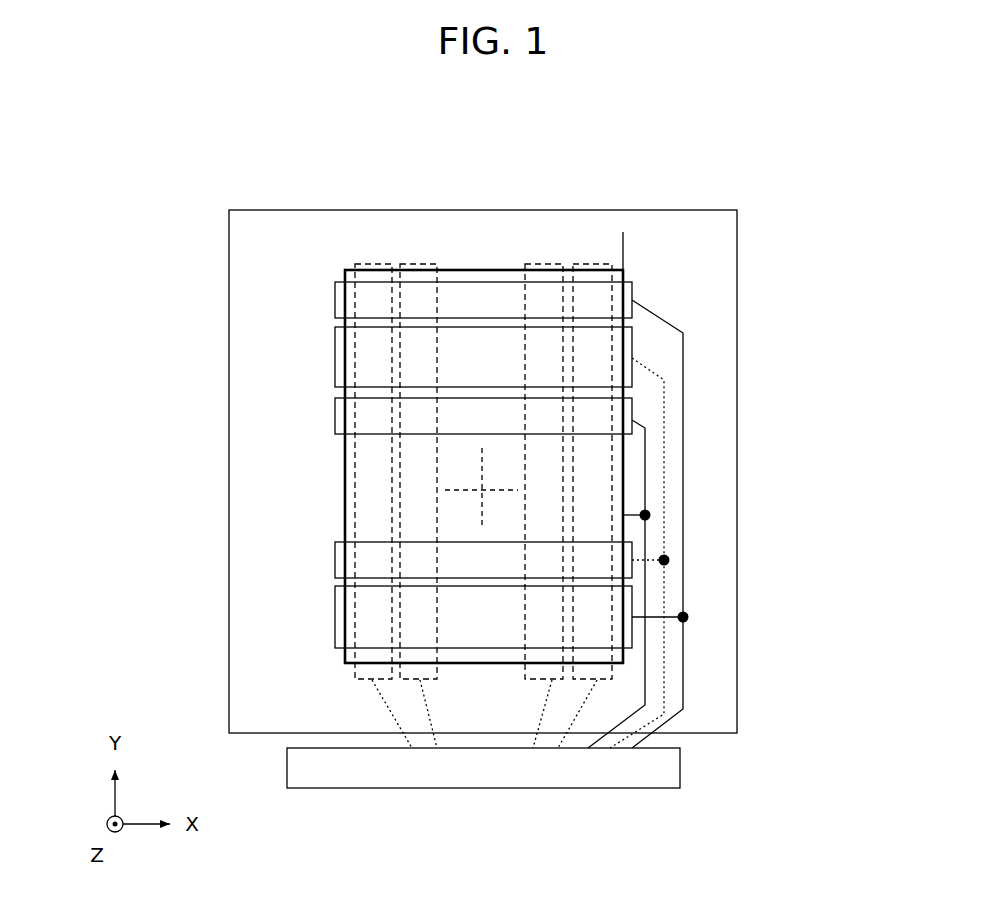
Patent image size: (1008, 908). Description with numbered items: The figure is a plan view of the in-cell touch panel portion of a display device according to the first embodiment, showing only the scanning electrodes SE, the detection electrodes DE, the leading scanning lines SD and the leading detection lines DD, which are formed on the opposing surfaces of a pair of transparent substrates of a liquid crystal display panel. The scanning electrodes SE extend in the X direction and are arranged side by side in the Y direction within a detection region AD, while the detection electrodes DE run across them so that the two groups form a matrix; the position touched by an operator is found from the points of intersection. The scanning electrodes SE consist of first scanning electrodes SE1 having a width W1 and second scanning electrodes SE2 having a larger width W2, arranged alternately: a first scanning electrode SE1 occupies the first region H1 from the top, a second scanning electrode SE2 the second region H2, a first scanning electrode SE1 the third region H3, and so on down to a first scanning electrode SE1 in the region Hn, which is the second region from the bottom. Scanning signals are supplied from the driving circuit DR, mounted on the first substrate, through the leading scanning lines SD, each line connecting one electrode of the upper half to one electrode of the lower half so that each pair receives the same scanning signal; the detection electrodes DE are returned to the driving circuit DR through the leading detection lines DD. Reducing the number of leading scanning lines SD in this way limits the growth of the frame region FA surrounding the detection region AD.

The detection region AD is at (484, 409).
The frame region FA is at (623, 248).
The detection electrode DE is at (499, 415).
The scanning electrode SE is at (836, 252).
The first scanning electrode SE1 is at (632, 290).
The second scanning electrode SE2 is at (632, 348).
The leading scanning line SD is at (648, 463).
The leading detection line DD is at (576, 712).
The driving circuit DR is at (483, 768).
The width of first scanning electrode W1 is at (335, 282).
The width of second scanning electrode W2 is at (335, 327).
The first region H1 is at (480, 302).
The second region H2 is at (480, 358).
The third region H3 is at (480, 421).
The n-th region Hn is at (480, 564).